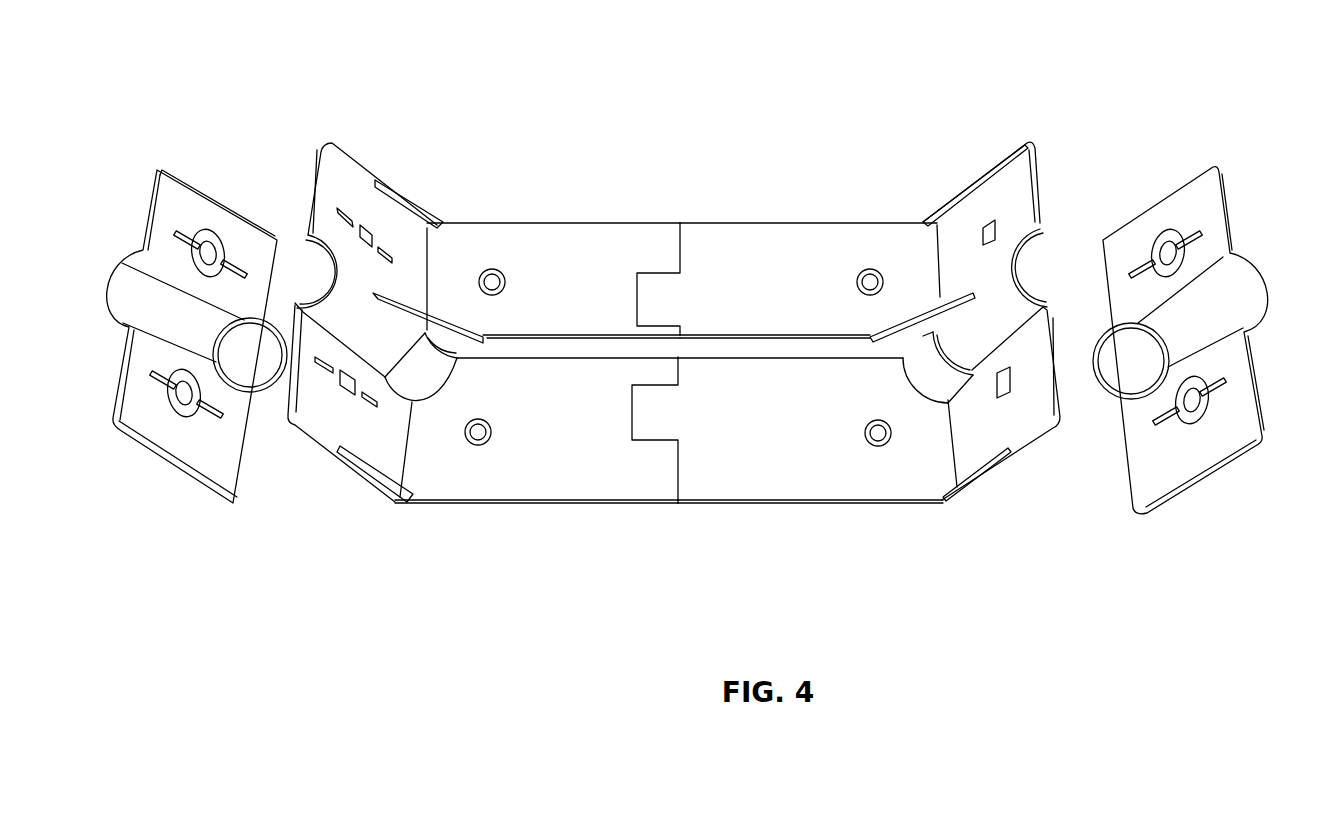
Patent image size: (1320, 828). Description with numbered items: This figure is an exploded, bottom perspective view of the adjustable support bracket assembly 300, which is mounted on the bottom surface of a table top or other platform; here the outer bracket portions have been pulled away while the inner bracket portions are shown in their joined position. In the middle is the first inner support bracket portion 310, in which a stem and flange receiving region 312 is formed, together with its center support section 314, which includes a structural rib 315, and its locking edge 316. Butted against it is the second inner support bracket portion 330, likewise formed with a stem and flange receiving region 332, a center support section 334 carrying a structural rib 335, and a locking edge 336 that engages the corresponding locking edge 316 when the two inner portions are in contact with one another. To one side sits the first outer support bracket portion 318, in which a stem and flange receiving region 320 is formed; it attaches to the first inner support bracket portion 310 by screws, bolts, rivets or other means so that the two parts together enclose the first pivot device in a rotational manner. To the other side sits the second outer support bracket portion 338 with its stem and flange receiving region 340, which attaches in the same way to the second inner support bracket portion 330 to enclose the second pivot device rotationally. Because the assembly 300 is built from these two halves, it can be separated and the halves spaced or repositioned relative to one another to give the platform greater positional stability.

The adjustable support bracket assembly 300 is at (706, 138).
The first inner support bracket portion 310 is at (412, 198).
The stem and flange receiving region 312 is at (372, 278).
The center support section 314 is at (562, 448).
The structural rib 315 is at (538, 332).
The locking edge 316 is at (632, 280).
The first outer support bracket portion 318 is at (147, 217).
The stem and flange receiving region 320 is at (170, 310).
The second inner support bracket portion 330 is at (940, 200).
The stem and flange receiving region 332 is at (982, 335).
The center support section 334 is at (790, 270).
The structural rib 335 is at (765, 347).
The locking edge 336 is at (677, 467).
The second outer support bracket portion 338 is at (1158, 193).
The stem and flange receiving region 340 is at (1237, 292).